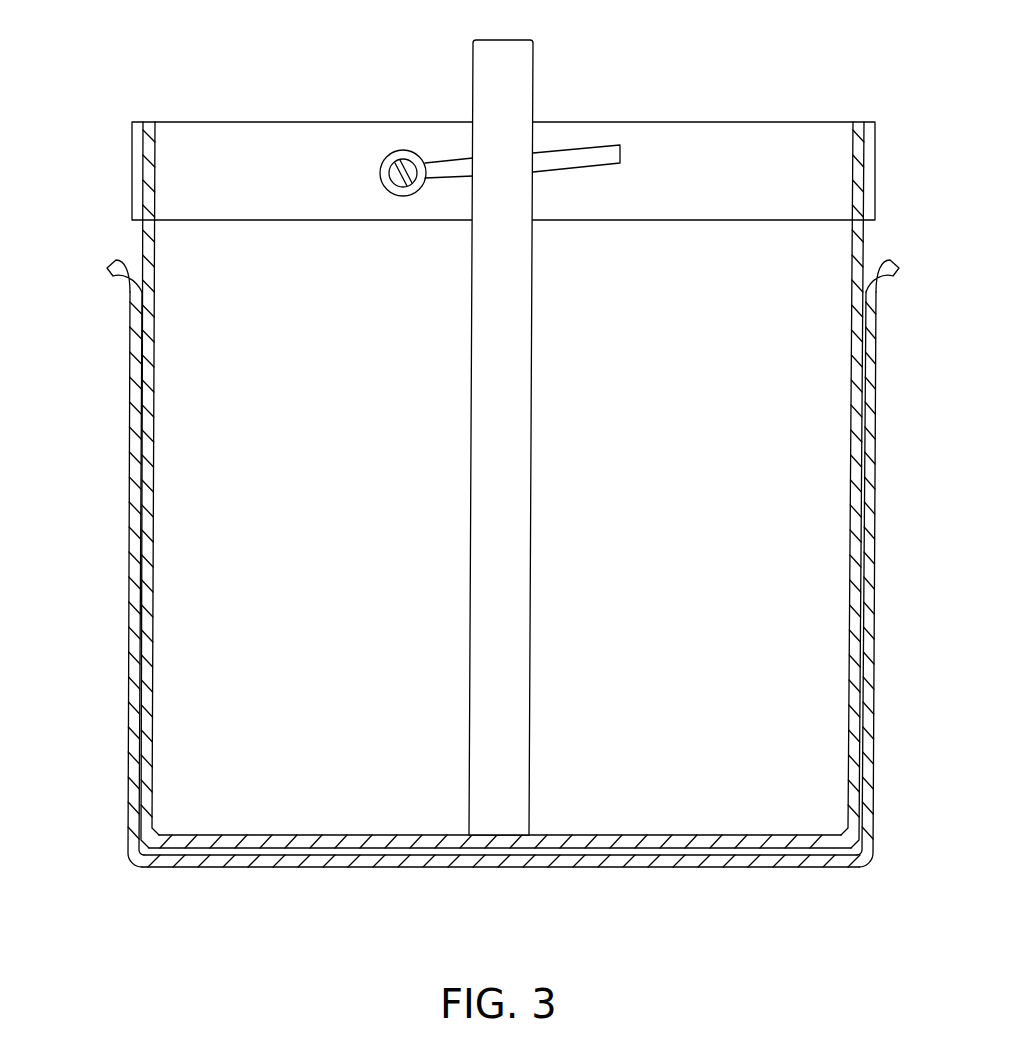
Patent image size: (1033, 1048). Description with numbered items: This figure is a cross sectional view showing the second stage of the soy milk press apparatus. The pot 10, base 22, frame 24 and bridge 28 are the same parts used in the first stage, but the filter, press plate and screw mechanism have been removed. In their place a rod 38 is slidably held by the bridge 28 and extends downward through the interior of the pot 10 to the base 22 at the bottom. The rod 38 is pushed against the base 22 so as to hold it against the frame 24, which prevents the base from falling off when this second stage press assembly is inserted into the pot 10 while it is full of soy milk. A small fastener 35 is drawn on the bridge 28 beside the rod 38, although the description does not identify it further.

The pot 10 is at (127, 583).
The base plate 22 is at (345, 842).
The frame 24 is at (150, 698).
The bridge 28 is at (265, 158).
The fastener 35 is at (457, 168).
The rod 38 is at (527, 92).